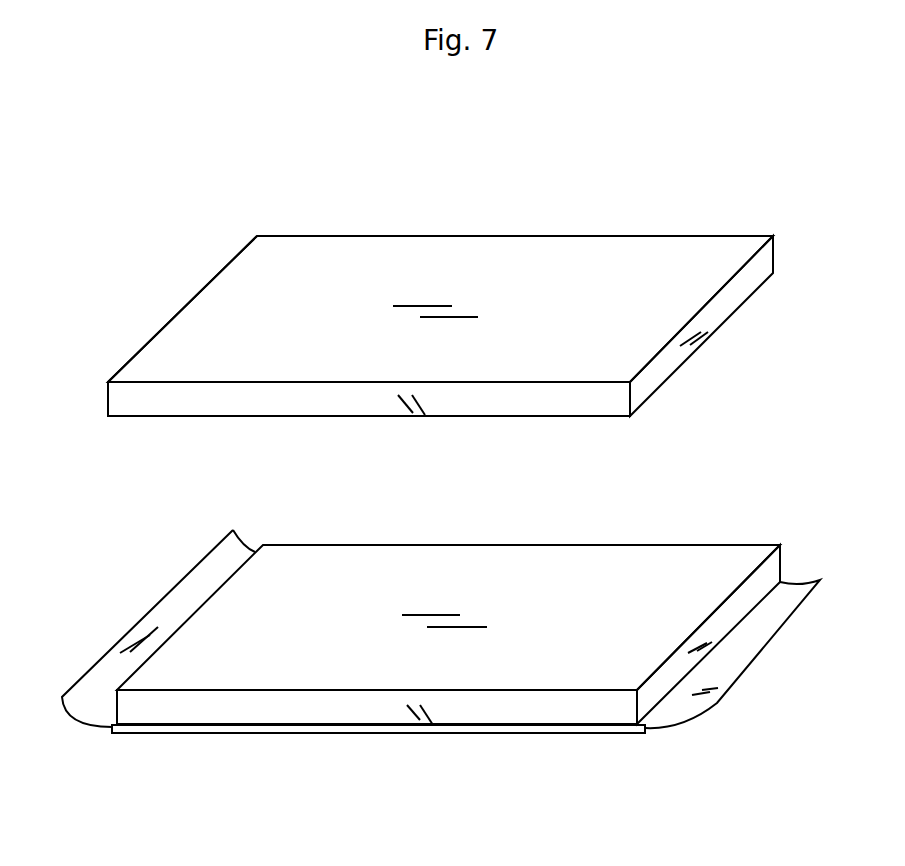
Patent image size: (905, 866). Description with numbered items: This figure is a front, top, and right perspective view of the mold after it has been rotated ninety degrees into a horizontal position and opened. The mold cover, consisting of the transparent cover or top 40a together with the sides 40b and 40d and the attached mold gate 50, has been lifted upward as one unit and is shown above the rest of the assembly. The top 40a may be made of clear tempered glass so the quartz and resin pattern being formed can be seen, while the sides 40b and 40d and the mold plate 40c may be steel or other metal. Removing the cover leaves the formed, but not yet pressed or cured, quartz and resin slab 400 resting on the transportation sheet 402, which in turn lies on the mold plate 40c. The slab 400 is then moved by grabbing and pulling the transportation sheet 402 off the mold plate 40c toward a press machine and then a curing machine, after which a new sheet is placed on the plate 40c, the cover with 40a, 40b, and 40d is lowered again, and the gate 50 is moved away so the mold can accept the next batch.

The transparent cover 40a is at (238, 278).
The side of mold 40b is at (648, 388).
The mold plate 40c is at (330, 729).
The side of mold 40d is at (138, 347).
The mold gate 50 is at (175, 405).
The slab 400 is at (642, 583).
The transportation sheet 402 is at (93, 698).